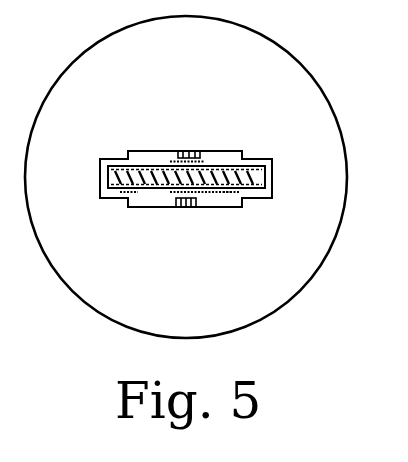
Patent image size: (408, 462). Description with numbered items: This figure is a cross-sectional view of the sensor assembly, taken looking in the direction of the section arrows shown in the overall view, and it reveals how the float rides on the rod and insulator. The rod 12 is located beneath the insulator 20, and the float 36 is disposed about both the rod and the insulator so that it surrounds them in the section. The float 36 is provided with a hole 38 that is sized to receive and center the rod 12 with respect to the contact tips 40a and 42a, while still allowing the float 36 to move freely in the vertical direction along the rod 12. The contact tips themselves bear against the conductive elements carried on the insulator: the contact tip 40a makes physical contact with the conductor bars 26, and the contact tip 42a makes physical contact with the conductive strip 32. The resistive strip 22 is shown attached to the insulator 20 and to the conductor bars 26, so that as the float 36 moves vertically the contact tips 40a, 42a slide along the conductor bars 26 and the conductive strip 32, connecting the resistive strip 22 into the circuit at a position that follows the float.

The float 36 is at (339, 133).
The insulator 20 is at (266, 158).
The rod 12 is at (240, 156).
The conductive strip 32 is at (205, 151).
The contact tip 42a is at (205, 150).
The conductor bars 26 is at (210, 198).
The contact tip 40a is at (208, 209).
The hole 38 is at (141, 206).
The resistive strip 22 is at (245, 201).